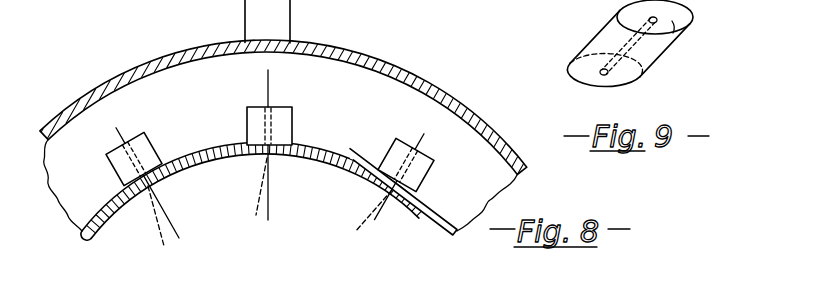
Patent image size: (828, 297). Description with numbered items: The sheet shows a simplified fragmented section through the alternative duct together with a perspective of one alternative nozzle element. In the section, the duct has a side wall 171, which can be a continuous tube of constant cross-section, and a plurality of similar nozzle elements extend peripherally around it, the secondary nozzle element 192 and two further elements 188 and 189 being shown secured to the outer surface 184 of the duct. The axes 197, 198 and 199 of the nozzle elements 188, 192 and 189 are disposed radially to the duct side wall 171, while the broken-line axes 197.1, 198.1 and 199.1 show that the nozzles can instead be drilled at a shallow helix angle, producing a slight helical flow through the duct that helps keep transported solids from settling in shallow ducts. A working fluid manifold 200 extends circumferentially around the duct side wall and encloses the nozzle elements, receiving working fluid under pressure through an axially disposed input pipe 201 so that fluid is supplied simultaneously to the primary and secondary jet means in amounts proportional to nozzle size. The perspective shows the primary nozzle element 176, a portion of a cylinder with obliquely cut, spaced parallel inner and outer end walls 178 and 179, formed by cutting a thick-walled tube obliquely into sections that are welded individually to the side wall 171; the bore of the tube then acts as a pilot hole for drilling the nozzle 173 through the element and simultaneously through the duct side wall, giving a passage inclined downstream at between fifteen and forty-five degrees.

In FIG. 8, the side wall 171 is at (96, 236).
In FIG. 9, the nozzle 173 is at (603, 80).
In FIG. 9, the primary nozzle element 176 is at (598, 25).
In FIG. 9, the inner end wall 178 is at (623, 88).
In FIG. 9, the outer end wall 179 is at (672, 26).
In FIG. 8, the outer surface 184 is at (367, 143).
In FIG. 8, the nozzle element 188 is at (176, 126).
In FIG. 8, the nozzle element 189 is at (432, 127).
In FIG. 8, the secondary nozzle element 192 is at (247, 118).
In FIG. 8, the axis 197 is at (167, 189).
In FIG. 8, the secondary jet axis 197.1 is at (165, 243).
In FIG. 8, the axis 198 is at (270, 181).
In FIG. 8, the secondary jet axis 198.1 is at (258, 197).
In FIG. 8, the axis 199 is at (372, 221).
In FIG. 8, the secondary jet axis 199.1 is at (372, 205).
In FIG. 8, the working fluid manifold 200 is at (382, 61).
In FIG. 8, the input pipe 201 is at (247, 28).